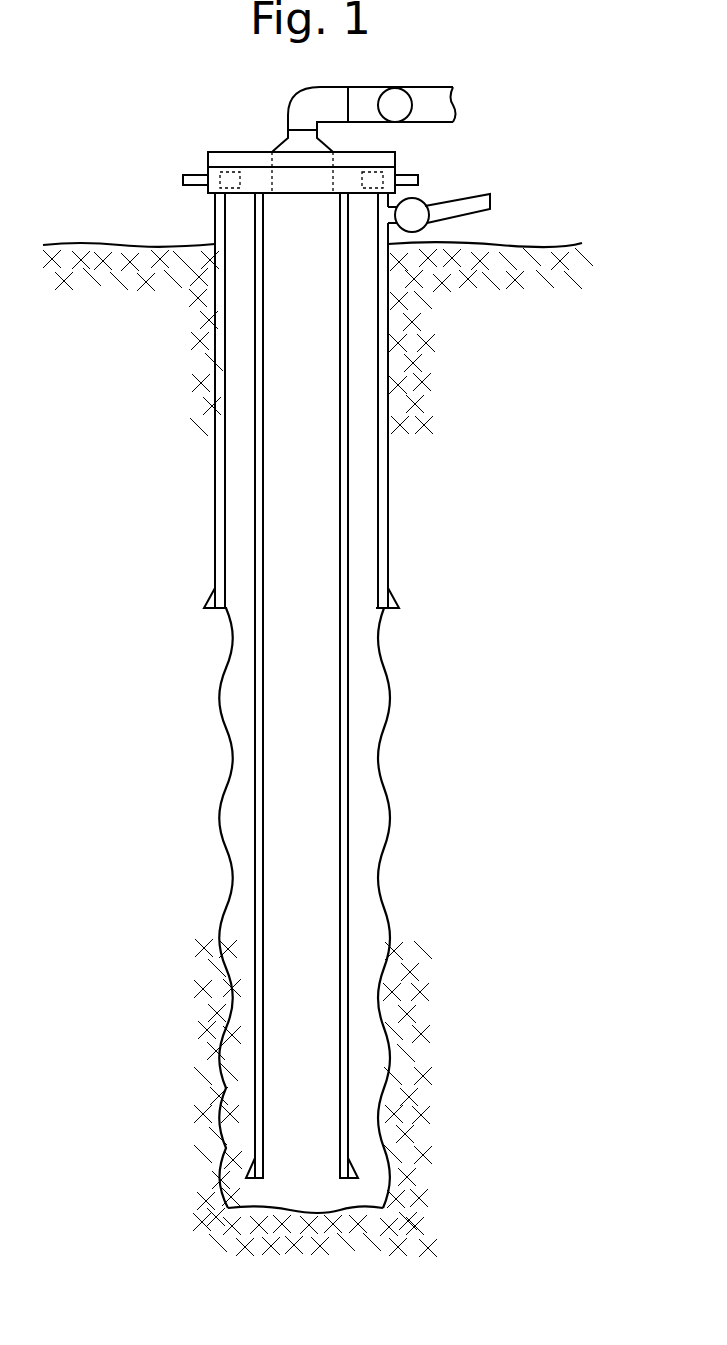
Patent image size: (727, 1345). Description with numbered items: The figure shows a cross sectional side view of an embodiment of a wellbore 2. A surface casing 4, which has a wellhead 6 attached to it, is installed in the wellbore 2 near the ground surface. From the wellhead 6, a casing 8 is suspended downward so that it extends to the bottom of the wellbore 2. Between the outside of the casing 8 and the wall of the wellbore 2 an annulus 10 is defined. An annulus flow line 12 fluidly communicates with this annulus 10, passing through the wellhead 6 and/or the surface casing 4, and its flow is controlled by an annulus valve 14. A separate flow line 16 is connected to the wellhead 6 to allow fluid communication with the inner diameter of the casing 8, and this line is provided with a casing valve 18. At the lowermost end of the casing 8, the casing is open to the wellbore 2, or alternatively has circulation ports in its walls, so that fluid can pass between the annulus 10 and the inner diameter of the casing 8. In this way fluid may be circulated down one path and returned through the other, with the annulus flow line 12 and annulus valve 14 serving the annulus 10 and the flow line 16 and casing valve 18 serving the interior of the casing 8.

The wellbore 2 is at (390, 660).
The surface casing 4 is at (390, 497).
The wellhead 6 is at (208, 173).
The casing 8 is at (352, 998).
The annulus 10 is at (357, 613).
The annulus flow line 12 is at (490, 210).
The annulus valve 14 is at (425, 203).
The flow line 16 is at (433, 102).
The casing valve 18 is at (398, 108).